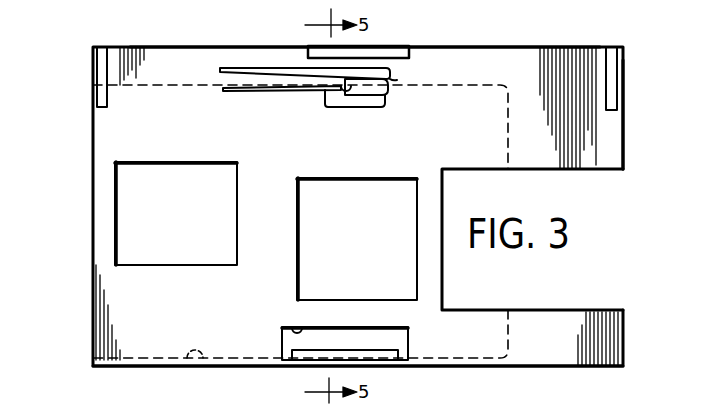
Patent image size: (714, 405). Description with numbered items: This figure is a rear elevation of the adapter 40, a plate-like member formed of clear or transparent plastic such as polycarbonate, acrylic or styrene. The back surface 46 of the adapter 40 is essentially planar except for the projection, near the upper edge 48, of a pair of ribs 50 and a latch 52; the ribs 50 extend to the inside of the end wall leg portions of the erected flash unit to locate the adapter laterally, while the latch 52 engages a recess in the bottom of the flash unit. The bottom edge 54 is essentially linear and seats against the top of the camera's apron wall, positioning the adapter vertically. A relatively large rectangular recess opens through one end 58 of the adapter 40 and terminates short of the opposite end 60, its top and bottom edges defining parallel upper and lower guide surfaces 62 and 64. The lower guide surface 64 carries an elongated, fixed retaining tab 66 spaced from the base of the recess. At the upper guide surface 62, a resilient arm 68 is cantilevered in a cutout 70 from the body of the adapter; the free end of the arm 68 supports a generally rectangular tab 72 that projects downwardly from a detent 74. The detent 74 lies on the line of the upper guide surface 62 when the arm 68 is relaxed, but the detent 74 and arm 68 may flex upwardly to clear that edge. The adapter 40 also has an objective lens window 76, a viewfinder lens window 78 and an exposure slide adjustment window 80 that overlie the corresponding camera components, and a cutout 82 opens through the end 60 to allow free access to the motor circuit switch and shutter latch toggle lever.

The adapter 40 is at (93, 128).
The back surface 46 is at (193, 320).
The upper edge 48 is at (518, 48).
The ribs 50 is at (107, 97).
The latch 52 is at (393, 53).
The bottom edge 54 is at (490, 363).
The one end 58 is at (93, 211).
The opposite end 60 is at (625, 148).
The upper guide surface 62 is at (180, 86).
The lower guide surface 64 is at (190, 370).
The retaining tab 66 is at (382, 356).
The resilient arm 68 is at (275, 83).
The cutout 70 is at (390, 79).
The rectangular tab 72 is at (390, 92).
The detent 74 is at (347, 90).
The objective lens window 76 is at (417, 240).
The viewfinder lens window 78 is at (237, 213).
The exposure slide adjustment window 80 is at (297, 326).
The cutout 82 is at (552, 310).